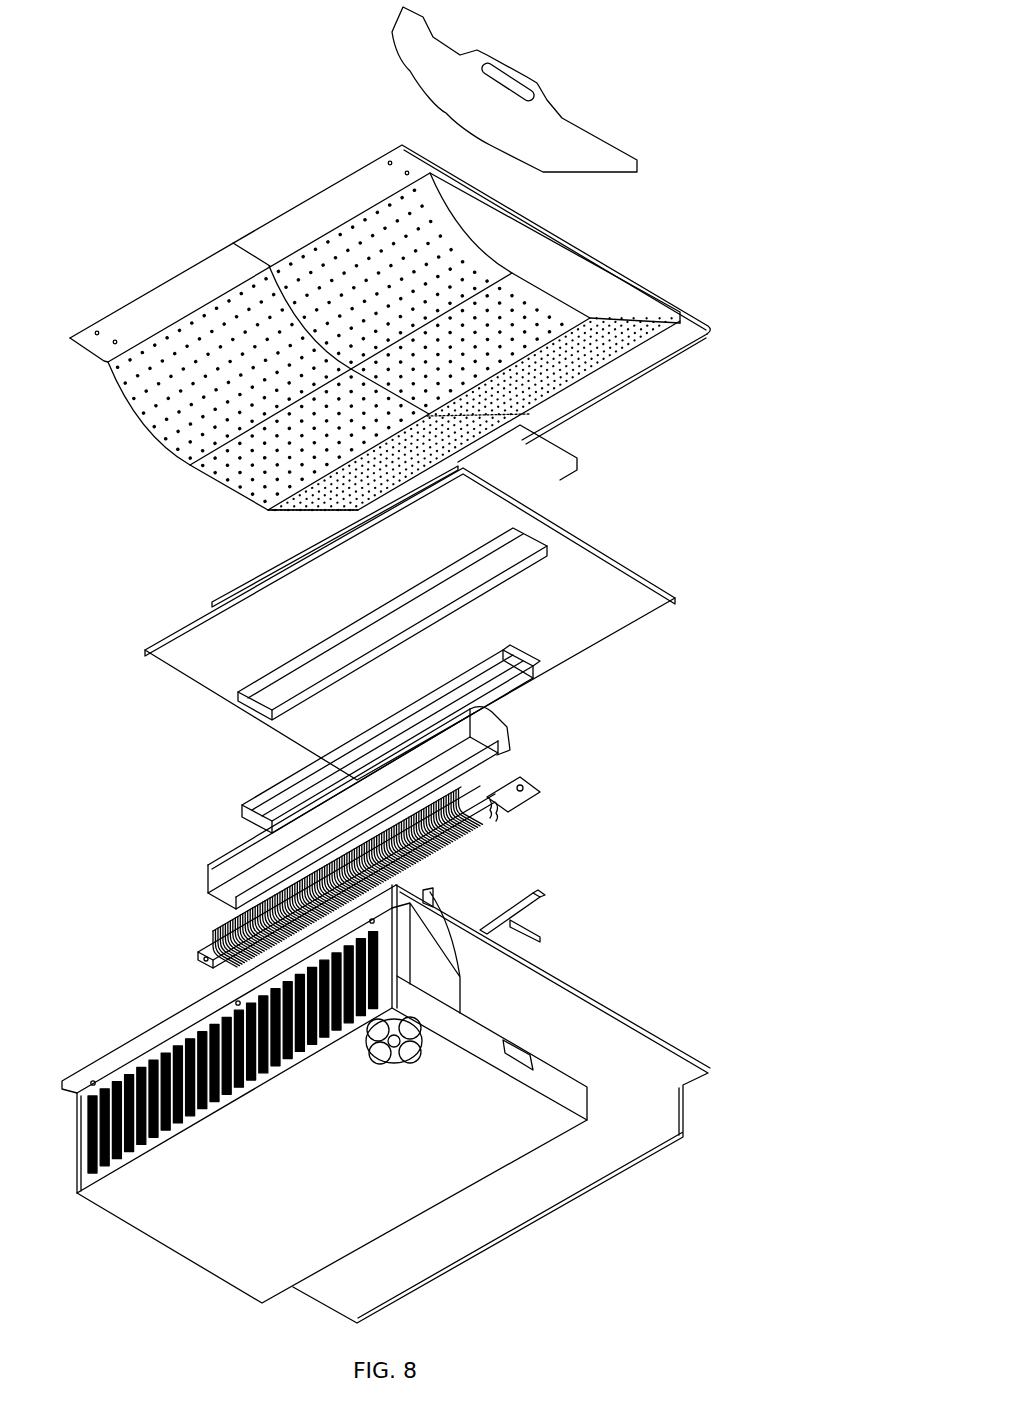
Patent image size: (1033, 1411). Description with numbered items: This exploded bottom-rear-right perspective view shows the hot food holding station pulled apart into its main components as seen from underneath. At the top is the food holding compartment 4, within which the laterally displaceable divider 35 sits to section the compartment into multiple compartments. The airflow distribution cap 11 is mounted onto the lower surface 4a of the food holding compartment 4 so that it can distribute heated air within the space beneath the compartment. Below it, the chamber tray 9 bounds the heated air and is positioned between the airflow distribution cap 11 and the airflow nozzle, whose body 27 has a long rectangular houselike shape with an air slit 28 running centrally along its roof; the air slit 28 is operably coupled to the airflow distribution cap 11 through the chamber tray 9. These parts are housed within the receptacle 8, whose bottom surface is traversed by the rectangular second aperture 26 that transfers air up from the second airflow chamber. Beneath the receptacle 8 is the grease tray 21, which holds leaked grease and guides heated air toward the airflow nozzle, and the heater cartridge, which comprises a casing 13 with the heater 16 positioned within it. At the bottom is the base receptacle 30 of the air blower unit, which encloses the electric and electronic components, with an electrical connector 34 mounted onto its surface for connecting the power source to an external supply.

The divider 35 is at (557, 124).
The food holding compartment 4 is at (390, 347).
The lower surface 4a is at (233, 488).
The airflow distribution cap 11 is at (577, 455).
The chamber tray 9 is at (410, 623).
The second aperture 26 is at (530, 550).
The air slit 28 is at (513, 667).
The body 27 is at (370, 739).
The casing 13 is at (205, 865).
The heater 16 is at (210, 930).
The grease tray 21 is at (547, 912).
The receptacle 8 is at (386, 1104).
The base receptacle 30 is at (488, 1153).
The electrical connector 34 is at (390, 1070).